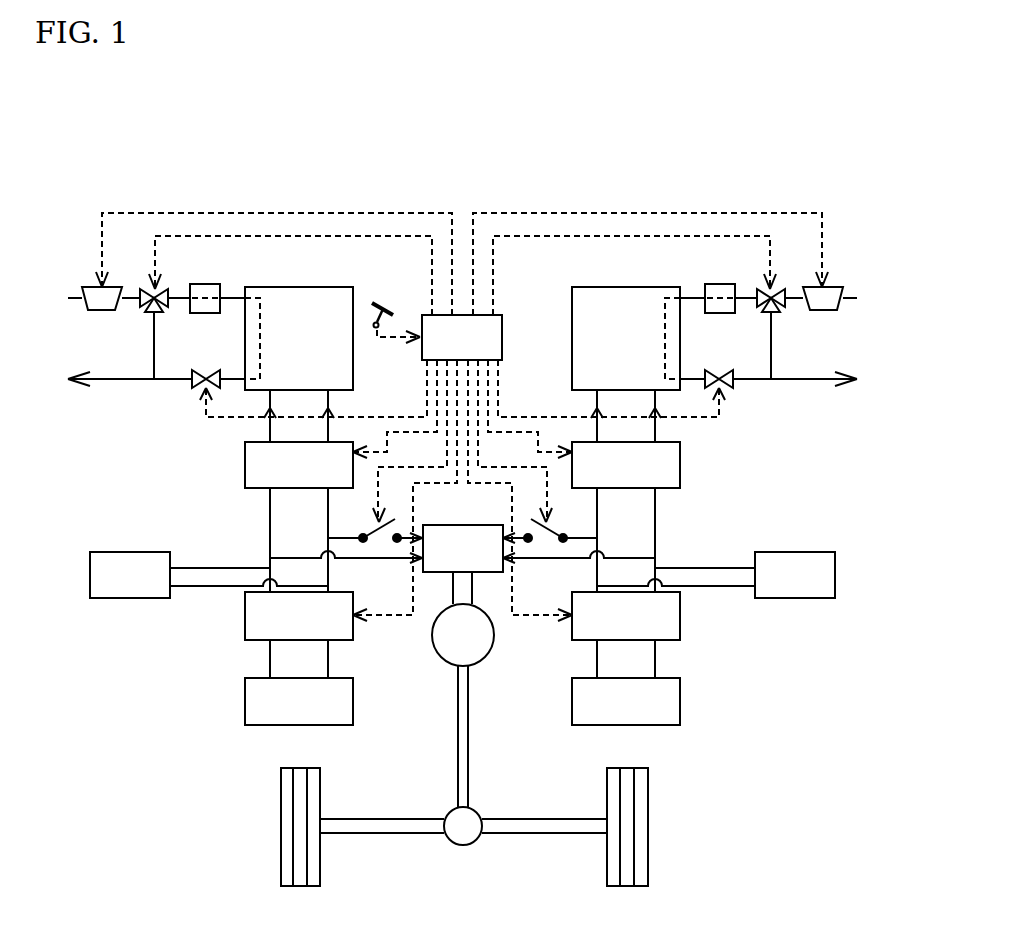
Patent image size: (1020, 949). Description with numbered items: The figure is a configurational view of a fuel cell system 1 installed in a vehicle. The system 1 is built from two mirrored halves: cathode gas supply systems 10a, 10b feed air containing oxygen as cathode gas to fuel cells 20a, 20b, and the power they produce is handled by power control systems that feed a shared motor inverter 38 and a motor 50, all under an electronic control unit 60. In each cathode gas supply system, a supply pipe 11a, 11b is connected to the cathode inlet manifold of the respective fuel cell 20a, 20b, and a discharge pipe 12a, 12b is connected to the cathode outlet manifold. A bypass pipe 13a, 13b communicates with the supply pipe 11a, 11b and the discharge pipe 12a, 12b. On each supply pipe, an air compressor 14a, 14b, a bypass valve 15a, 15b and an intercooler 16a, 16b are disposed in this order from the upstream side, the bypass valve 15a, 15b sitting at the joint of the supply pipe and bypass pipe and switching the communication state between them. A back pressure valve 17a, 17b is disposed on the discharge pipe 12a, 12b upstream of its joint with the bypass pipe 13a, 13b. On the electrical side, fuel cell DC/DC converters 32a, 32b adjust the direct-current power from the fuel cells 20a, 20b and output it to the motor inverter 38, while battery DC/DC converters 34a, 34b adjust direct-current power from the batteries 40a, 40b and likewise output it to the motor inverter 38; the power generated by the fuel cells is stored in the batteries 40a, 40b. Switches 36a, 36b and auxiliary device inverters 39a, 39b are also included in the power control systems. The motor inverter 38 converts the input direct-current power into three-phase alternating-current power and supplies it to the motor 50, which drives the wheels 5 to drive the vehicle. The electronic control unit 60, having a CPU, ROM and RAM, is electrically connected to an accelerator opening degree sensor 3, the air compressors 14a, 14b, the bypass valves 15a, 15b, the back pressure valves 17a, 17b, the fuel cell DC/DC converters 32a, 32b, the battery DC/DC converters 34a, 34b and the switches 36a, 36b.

The fuel cell system 1 is at (800, 162).
The accelerator opening degree sensor 3 is at (375, 330).
The wheels 5 is at (281, 855).
The cathode gas supply system 10a is at (103, 422).
The cathode gas supply system 10b is at (822, 422).
The supply pipe 11a is at (231, 302).
The supply pipe 11b is at (694, 302).
The discharge pipe 12a is at (165, 381).
The discharge pipe 12b is at (760, 381).
The bypass pipe 13a is at (154, 357).
The bypass pipe 13b is at (771, 357).
The air compressor 14a is at (84, 290).
The air compressor 14b is at (841, 290).
The bypass valve 15a is at (148, 308).
The bypass valve 15b is at (777, 306).
The intercooler 16a is at (200, 284).
The intercooler 16b is at (725, 284).
The back pressure valve 17a is at (206, 370).
The back pressure valve 17b is at (719, 370).
The fuel cell 20a is at (327, 287).
The fuel cell 20b is at (598, 287).
The fuel cell DC/DC converter 32a is at (245, 468).
The fuel cell DC/DC converter 32b is at (680, 468).
The battery DC/DC converter 34a is at (245, 618).
The battery DC/DC converter 34b is at (680, 618).
The switch 36a is at (368, 528).
The switch 36b is at (557, 528).
The motor inverter 38 is at (483, 525).
The auxiliary device inverter 39a is at (113, 552).
The auxiliary device inverter 39b is at (812, 552).
The battery 40a is at (245, 703).
The battery 40b is at (680, 703).
The motor 50 is at (493, 640).
The electronic control unit 60 is at (502, 338).